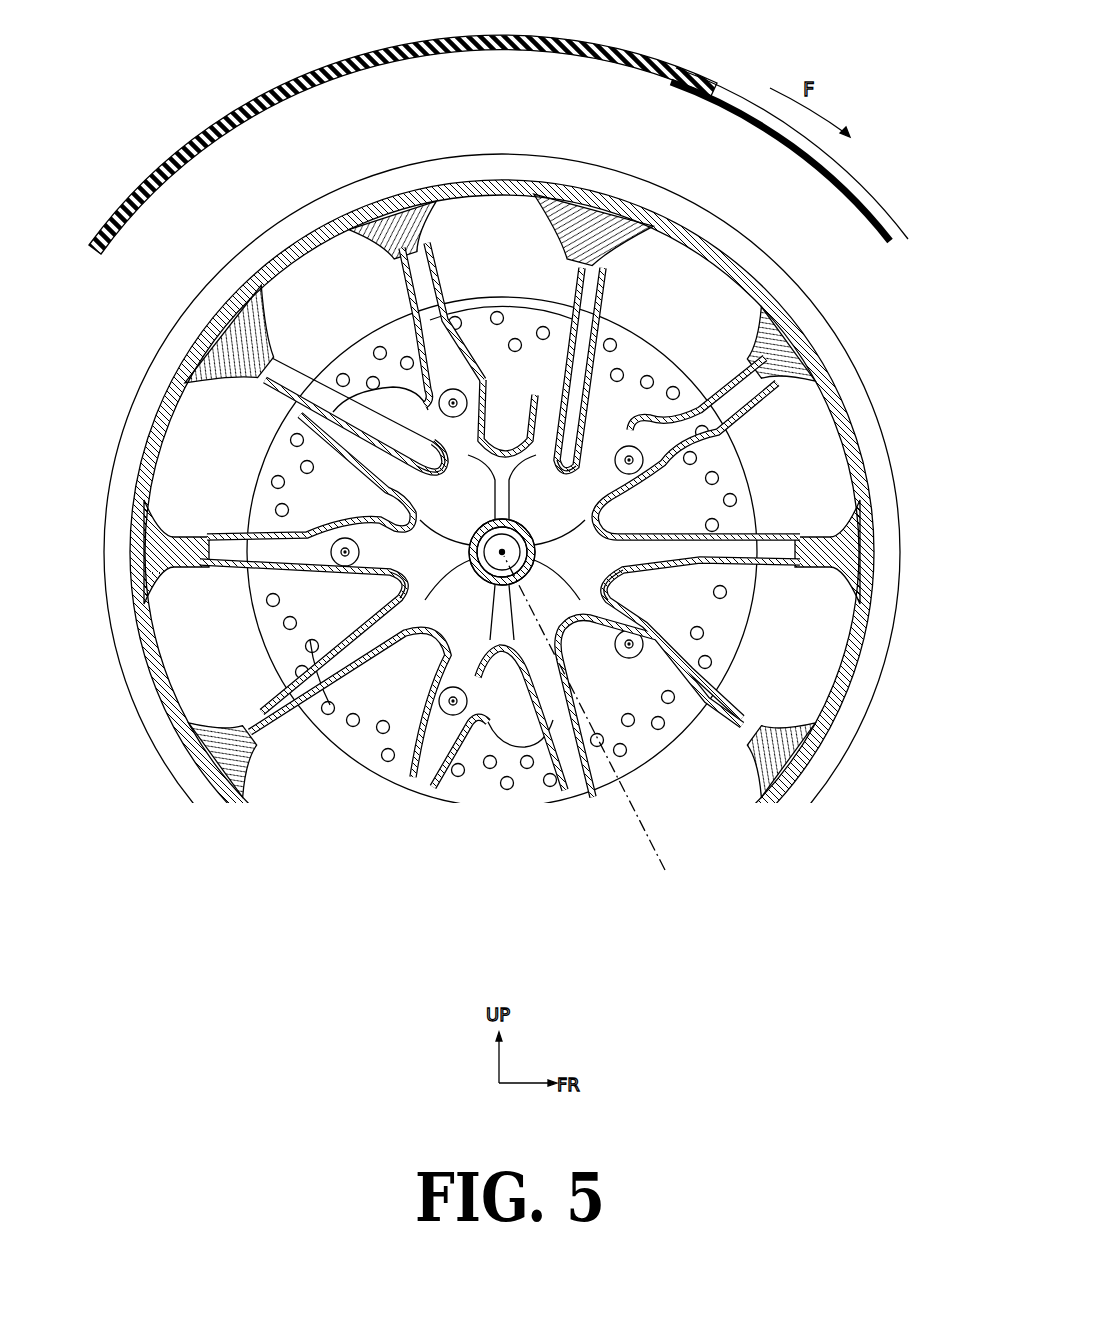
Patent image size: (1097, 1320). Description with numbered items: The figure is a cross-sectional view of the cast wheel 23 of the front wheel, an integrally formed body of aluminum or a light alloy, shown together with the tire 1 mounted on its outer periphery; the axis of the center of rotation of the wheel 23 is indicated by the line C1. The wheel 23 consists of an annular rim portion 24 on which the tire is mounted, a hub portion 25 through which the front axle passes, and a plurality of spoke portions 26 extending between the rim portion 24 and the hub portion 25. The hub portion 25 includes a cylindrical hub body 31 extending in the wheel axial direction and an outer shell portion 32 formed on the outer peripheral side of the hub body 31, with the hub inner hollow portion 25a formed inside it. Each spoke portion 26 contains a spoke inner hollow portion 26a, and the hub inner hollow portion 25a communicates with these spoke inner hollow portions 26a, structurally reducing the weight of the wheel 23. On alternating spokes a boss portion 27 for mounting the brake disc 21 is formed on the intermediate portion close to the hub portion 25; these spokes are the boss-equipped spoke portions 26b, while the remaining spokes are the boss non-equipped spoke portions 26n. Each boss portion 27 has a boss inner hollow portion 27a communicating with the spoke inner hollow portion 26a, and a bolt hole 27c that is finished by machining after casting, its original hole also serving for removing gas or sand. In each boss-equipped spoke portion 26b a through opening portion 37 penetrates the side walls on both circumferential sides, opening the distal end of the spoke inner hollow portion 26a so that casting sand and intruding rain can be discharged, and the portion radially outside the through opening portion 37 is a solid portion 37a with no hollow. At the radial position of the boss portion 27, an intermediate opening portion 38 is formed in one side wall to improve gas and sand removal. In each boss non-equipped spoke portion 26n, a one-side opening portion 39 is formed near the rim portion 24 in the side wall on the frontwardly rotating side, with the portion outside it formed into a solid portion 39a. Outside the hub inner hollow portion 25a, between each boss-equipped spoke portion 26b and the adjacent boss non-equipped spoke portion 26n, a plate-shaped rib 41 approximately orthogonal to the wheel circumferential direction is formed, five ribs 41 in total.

The tire 1 is at (668, 57).
The brake disc 21 is at (345, 338).
The wheel 23 is at (502, 535).
The rim portion 24 is at (683, 218).
The hub portion 25 is at (525, 701).
The hub inner hollow portion 25a is at (502, 556).
The spoke portion 26 is at (502, 522).
The spoke inner hollow portion 26a is at (322, 365).
The boss-equipped spoke portion 26b is at (448, 330).
The boss non-equipped spoke portion 26n is at (596, 335).
The boss portion 27 is at (586, 466).
The boss inner hollow portion 27a is at (463, 385).
The bolt hole 27c is at (462, 400).
The hub body 31 is at (503, 585).
The outer shell portion 32 is at (502, 552).
The through opening portion 37 is at (443, 247).
The solid portion 37a is at (400, 225).
The intermediate opening portion 38 is at (427, 430).
The one-side opening portion 39 is at (610, 270).
The solid portion 39a is at (583, 230).
The rib 41 is at (397, 580).
The axis of the center of rotation C1 is at (595, 724).